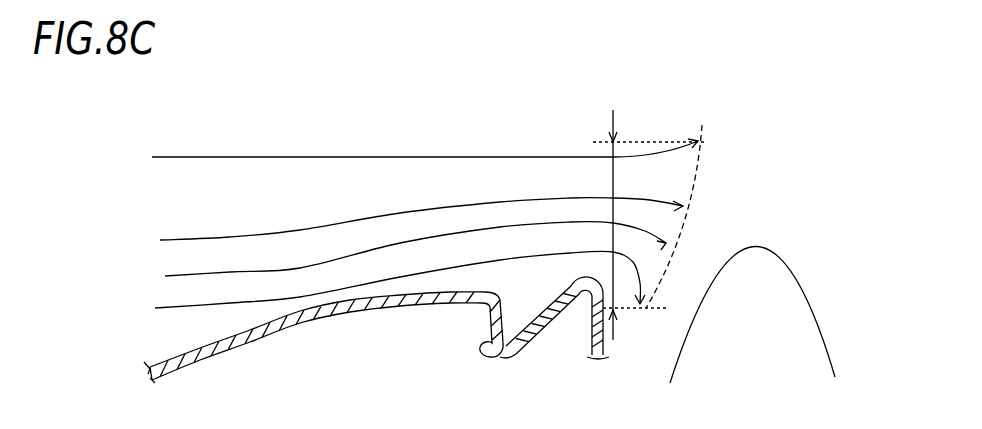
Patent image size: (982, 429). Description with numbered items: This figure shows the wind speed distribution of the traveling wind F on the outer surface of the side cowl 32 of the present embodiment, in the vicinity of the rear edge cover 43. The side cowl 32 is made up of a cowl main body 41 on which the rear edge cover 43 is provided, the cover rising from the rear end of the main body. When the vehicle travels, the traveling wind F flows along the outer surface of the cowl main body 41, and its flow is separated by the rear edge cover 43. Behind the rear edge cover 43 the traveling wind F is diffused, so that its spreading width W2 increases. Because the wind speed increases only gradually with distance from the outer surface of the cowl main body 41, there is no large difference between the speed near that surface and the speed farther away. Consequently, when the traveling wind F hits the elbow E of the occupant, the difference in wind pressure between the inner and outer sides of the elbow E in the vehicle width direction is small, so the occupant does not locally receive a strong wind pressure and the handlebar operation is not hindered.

The traveling wind F is at (393, 156).
The side cowl 32 is at (483, 185).
The spreading width W2 is at (617, 187).
The cowl main body 41 is at (322, 311).
The rear edge cover 43 is at (578, 276).
The elbow E is at (808, 295).